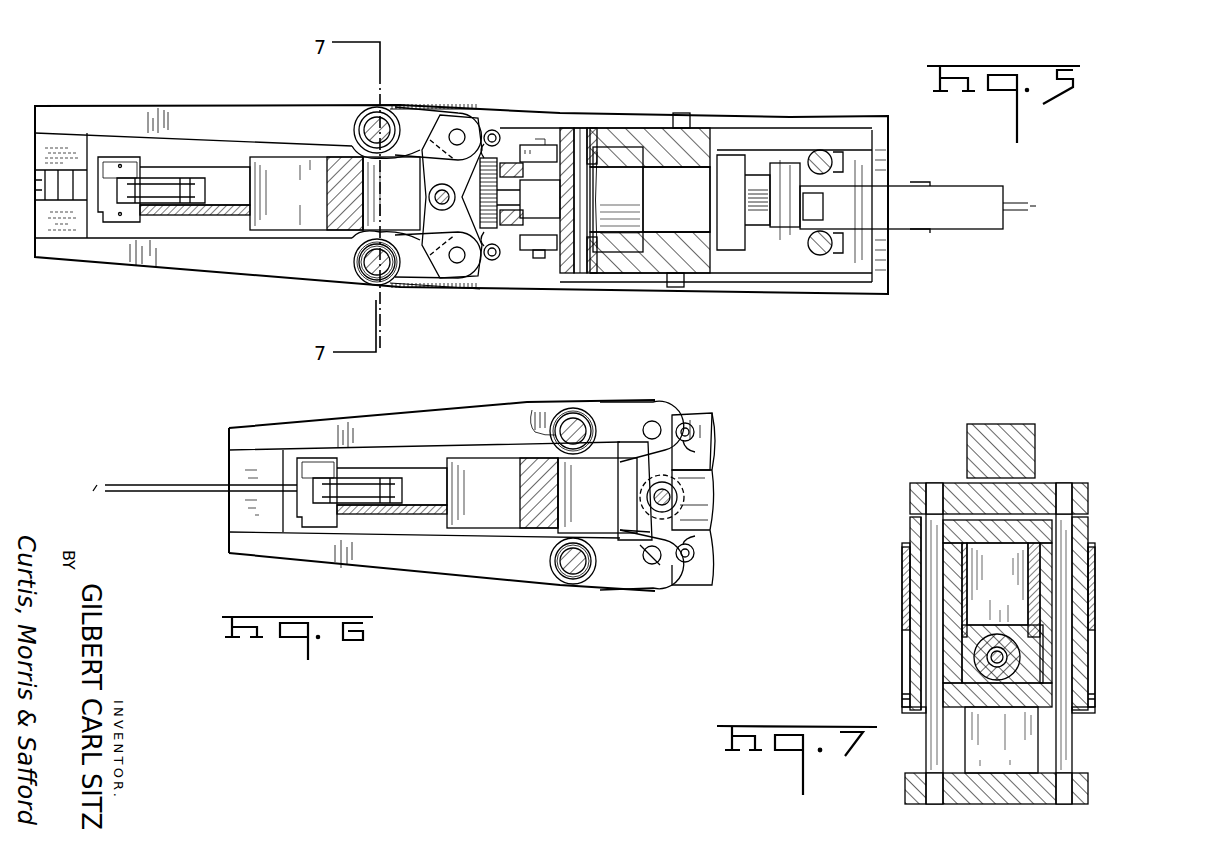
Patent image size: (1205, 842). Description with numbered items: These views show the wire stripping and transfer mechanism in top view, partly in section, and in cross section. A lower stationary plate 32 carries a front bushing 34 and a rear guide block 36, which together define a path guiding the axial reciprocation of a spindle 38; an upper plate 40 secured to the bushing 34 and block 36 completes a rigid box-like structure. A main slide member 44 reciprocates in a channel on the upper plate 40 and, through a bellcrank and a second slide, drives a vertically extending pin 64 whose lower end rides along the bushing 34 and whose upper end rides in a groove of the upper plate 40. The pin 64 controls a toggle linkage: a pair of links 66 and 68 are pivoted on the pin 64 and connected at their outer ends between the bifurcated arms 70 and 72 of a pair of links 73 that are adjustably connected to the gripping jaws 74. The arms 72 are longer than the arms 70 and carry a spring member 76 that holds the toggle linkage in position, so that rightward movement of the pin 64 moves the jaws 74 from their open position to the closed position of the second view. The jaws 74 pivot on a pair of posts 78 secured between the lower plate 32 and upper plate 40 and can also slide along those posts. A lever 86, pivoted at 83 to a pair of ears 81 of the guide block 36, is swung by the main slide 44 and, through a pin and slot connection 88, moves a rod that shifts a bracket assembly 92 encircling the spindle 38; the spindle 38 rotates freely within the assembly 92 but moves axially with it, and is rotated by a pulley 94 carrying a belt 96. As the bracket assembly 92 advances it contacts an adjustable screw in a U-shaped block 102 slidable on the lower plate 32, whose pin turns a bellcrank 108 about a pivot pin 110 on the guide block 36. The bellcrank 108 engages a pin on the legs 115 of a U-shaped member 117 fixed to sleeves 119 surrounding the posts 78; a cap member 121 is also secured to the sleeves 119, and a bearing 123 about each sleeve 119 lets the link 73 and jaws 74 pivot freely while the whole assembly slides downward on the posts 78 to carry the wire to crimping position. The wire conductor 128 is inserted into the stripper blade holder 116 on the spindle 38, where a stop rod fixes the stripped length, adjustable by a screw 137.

In FIG. 5, the lower stationary plate 32 is at (886, 132).
In FIG. 7, the lower stationary plate 32 is at (990, 788).
In FIG. 5, the front bushing 34 is at (291, 205).
In FIG. 6, the front bushing 34 is at (493, 505).
In FIG. 7, the front bushing 34 is at (1022, 682).
In FIG. 5, the rear guide block 36 is at (700, 155).
In FIG. 5, the spindle 38 is at (224, 178).
In FIG. 6, the spindle 38 is at (414, 500).
In FIG. 7, the spindle 38 is at (992, 647).
In FIG. 7, the upper plate 40 is at (1048, 490).
In FIG. 7, the main slide member 44 is at (1010, 437).
In FIG. 5, the vertically extending pin 64 is at (430, 200).
In FIG. 6, the vertically extending pin 64 is at (680, 497).
In FIG. 5, the link 66 is at (438, 133).
In FIG. 6, the link 66 is at (678, 467).
In FIG. 5, the link 68 is at (438, 255).
In FIG. 6, the link 68 is at (628, 550).
In FIG. 5, the bifurcated arm 70 is at (434, 112).
In FIG. 6, the bifurcated arm 70 is at (616, 447).
In FIG. 5, the bifurcated arm 72 is at (494, 128).
In FIG. 6, the bifurcated arm 72 is at (690, 422).
In FIG. 5, the link 73 is at (398, 104).
In FIG. 6, the link 73 is at (608, 416).
In FIG. 7, the link 73 is at (905, 575).
In FIG. 5, the gripping jaw 74 is at (175, 112).
In FIG. 6, the gripping jaw 74 is at (429, 420).
In FIG. 7, the gripping jaw 74 is at (900, 612).
In FIG. 5, the spring member 76 is at (520, 193).
In FIG. 6, the spring member 76 is at (708, 440).
In FIG. 5, the post 78 is at (372, 122).
In FIG. 6, the post 78 is at (585, 420).
In FIG. 7, the post 78 is at (930, 755).
In FIG. 5, the ear 81 is at (618, 140).
In FIG. 5, the pivot 83 is at (604, 208).
In FIG. 5, the lever 86 is at (553, 148).
In FIG. 5, the pin and slot connection 88 is at (540, 260).
In FIG. 5, the bracket assembly 92 is at (959, 189).
In FIG. 5, the pulley 94 is at (828, 188).
In FIG. 5, the belt 96 is at (822, 150).
In FIG. 5, the U-shaped block 102 is at (807, 268).
In FIG. 5, the bellcrank 108 is at (580, 127).
In FIG. 5, the pivot pin 110 is at (680, 112).
In FIG. 7, the leg 115 is at (902, 700).
In FIG. 5, the stripper blade holder 116 is at (106, 162).
In FIG. 7, the U-shaped member 117 is at (990, 720).
In FIG. 5, the sleeve 119 is at (374, 278).
In FIG. 6, the sleeve 119 is at (568, 412).
In FIG. 7, the sleeve 119 is at (918, 712).
In FIG. 7, the cap member 121 is at (1018, 530).
In FIG. 5, the bearing 123 is at (356, 263).
In FIG. 6, the bearing 123 is at (560, 425).
In FIG. 7, the bearing 123 is at (902, 588).
In FIG. 6, the wire conductor 128 is at (185, 493).
In FIG. 5, the screw 137 is at (745, 200).